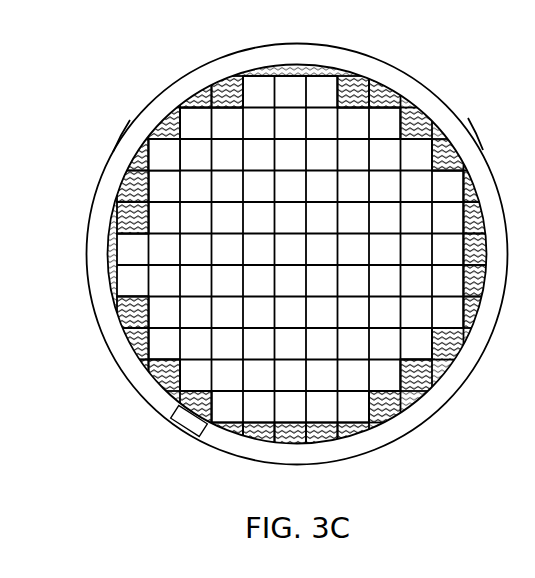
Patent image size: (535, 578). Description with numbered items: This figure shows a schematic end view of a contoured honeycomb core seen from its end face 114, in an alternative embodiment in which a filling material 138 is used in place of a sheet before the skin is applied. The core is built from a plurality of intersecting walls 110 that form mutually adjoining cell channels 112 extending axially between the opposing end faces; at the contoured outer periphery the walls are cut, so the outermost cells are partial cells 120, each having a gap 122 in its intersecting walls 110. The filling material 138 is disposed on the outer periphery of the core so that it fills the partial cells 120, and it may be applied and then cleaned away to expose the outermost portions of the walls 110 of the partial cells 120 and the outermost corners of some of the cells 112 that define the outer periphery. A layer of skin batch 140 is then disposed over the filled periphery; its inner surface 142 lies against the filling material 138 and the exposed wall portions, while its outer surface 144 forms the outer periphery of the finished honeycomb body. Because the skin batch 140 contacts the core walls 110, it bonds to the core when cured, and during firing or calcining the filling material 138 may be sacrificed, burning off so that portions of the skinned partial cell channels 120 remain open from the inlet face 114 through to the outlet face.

The intersecting walls 110 is at (200, 93).
The cell channels 112 is at (167, 150).
The end face 114 is at (393, 384).
The partial cell 120 is at (148, 375).
The gap 122 is at (181, 426).
The filling material 138 is at (462, 152).
The layer of skin batch 140 is at (118, 151).
The inner surface 142 is at (110, 220).
The outer surface 144 is at (88, 276).